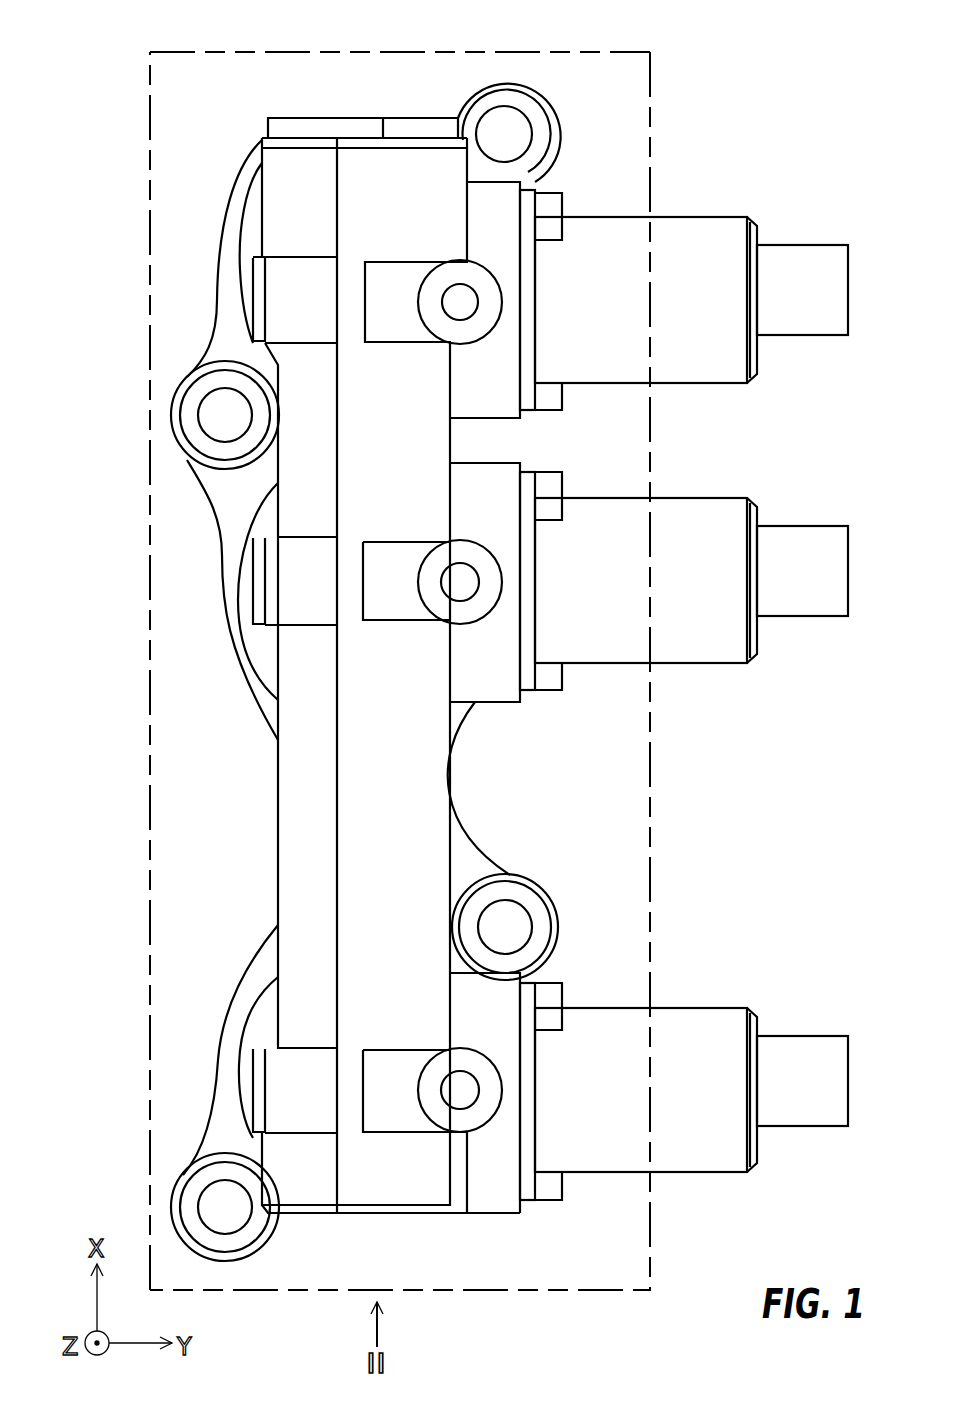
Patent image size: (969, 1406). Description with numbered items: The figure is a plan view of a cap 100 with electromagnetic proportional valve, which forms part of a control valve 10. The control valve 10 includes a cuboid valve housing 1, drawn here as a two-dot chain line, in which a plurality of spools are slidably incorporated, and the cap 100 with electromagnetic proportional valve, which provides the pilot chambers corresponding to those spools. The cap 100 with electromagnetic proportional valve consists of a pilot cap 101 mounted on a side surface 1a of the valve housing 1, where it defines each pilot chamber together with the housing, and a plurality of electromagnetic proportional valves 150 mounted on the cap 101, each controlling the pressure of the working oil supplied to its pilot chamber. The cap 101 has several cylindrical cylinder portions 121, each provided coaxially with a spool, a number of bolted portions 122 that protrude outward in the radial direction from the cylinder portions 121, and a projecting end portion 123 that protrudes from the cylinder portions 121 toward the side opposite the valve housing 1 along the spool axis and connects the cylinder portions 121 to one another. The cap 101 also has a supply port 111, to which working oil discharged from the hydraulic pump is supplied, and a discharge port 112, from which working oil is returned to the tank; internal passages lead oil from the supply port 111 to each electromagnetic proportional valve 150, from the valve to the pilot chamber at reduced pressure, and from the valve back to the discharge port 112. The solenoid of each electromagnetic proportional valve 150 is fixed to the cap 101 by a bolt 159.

The valve housing 1 is at (655, 820).
The side surface 1a is at (345, 98).
The control valve 10 is at (698, 86).
The cap with electromagnetic proportional valve 100 is at (232, 117).
The pilot cap 101 is at (277, 780).
The supply port 111 is at (400, 1215).
The discharge port 112 is at (303, 1215).
The cylinder portion 121 is at (223, 225).
The bolted portion 122 is at (540, 93).
The projecting end portion 123 is at (262, 155).
The electromagnetic proportional valve 150 is at (693, 639).
The bolt 159 is at (562, 203).